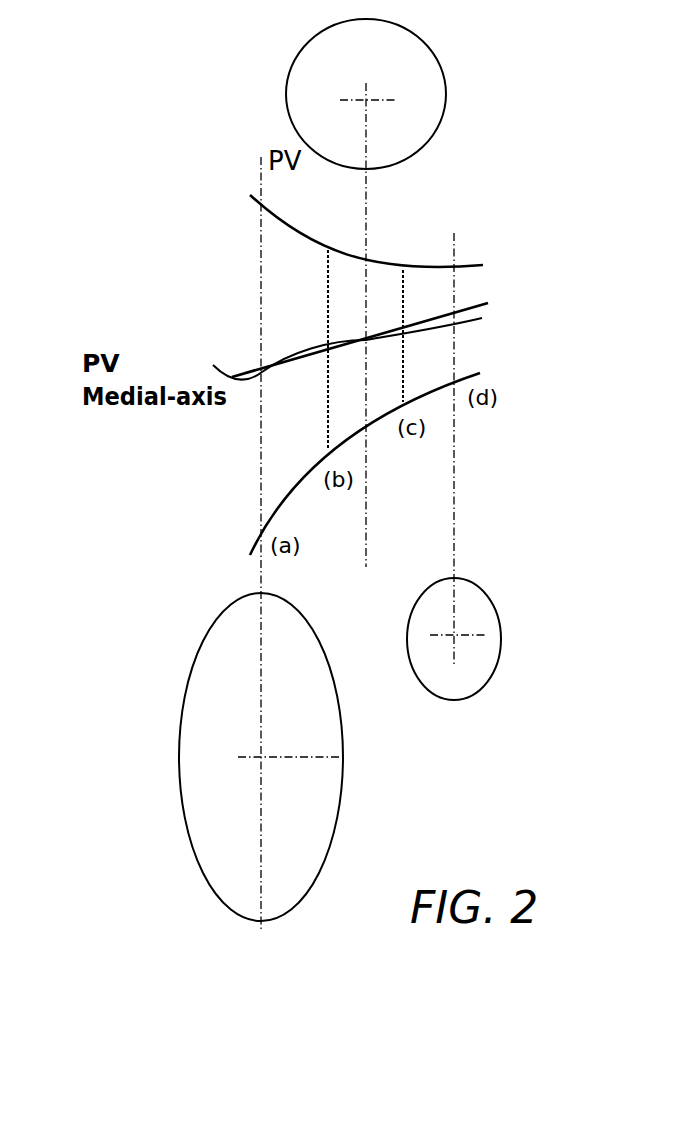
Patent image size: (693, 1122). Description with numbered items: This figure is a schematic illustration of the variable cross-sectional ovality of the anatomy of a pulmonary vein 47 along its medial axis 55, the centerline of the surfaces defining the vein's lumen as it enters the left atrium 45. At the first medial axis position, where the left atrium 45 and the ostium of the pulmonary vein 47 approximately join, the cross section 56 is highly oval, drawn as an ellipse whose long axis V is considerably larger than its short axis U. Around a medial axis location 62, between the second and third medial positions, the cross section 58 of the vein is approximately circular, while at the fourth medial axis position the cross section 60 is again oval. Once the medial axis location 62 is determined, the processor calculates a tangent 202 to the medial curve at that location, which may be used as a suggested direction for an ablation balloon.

The cross section 58 is at (408, 76).
The pulmonary vein 47 is at (310, 233).
The left atrium 45 is at (242, 301).
The medial axis 55 is at (292, 357).
The tangent 202 is at (480, 303).
The medial axis location 62 is at (367, 525).
The cross section 56 is at (305, 657).
The cross section 60 is at (447, 666).